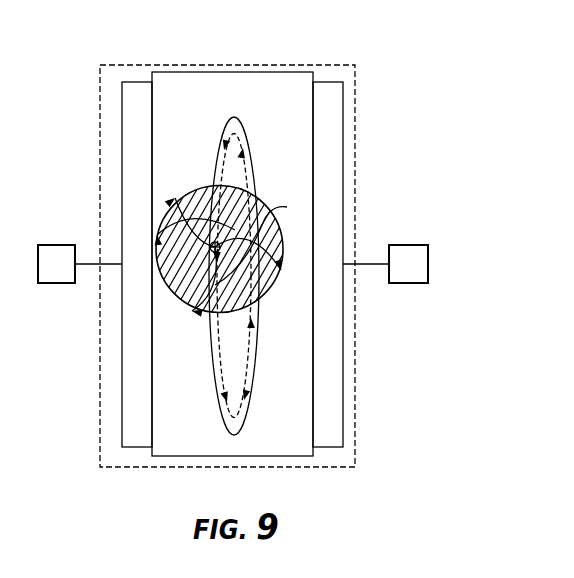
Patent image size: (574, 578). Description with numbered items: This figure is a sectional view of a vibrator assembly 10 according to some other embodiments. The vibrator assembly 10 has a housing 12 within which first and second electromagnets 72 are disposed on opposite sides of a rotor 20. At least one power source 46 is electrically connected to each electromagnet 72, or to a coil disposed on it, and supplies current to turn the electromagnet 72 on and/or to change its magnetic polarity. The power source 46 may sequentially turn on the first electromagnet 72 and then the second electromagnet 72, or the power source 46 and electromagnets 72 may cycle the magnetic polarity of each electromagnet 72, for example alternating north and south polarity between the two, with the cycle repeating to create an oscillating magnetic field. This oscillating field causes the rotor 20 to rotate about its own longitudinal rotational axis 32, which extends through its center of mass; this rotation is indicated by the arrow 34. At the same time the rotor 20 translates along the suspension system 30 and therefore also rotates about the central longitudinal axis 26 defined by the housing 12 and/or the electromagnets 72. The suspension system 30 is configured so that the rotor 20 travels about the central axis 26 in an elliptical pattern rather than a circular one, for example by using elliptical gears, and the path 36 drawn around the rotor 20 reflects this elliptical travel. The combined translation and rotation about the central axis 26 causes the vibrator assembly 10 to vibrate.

The vibrator assembly 10 is at (383, 60).
The housing 12 is at (355, 137).
The rotor 20 is at (200, 175).
The central longitudinal axis 26 is at (264, 242).
The suspension system 30 is at (265, 384).
The longitudinal rotational axis 32 is at (178, 284).
The arrow indicating rotor rotation 34 is at (166, 288).
The recirculation path 36 is at (220, 395).
The power source 46 is at (233, 264).
The electromagnet 72 is at (232, 264).